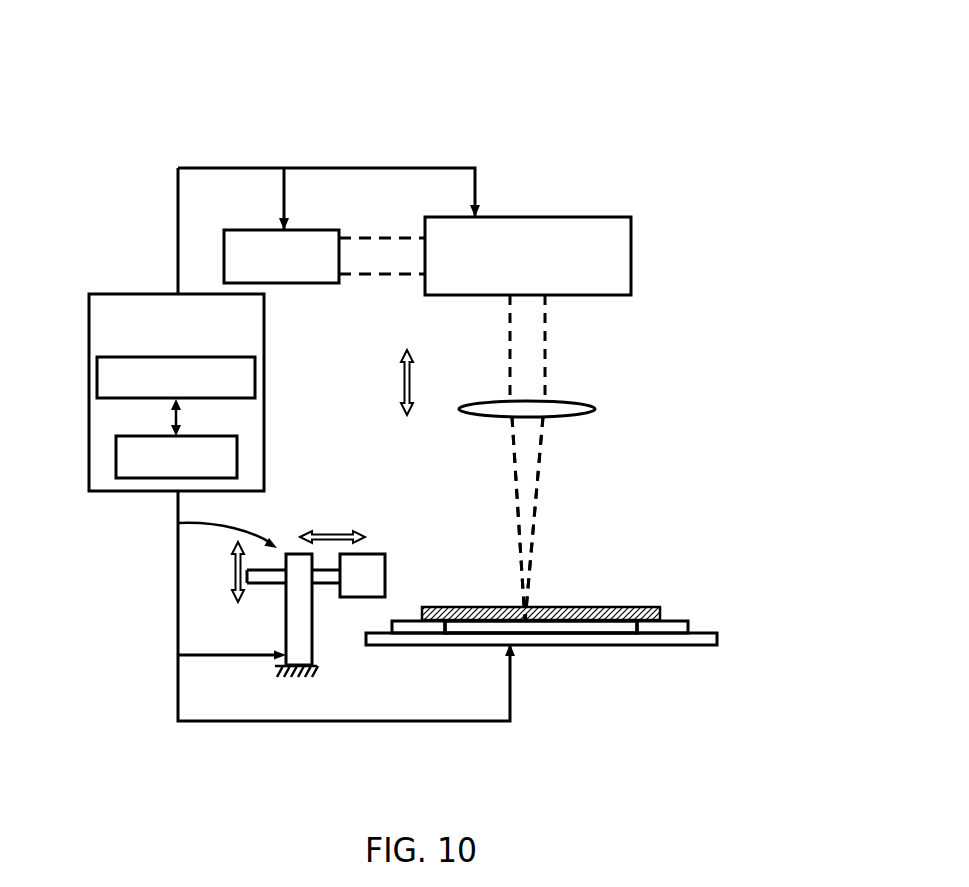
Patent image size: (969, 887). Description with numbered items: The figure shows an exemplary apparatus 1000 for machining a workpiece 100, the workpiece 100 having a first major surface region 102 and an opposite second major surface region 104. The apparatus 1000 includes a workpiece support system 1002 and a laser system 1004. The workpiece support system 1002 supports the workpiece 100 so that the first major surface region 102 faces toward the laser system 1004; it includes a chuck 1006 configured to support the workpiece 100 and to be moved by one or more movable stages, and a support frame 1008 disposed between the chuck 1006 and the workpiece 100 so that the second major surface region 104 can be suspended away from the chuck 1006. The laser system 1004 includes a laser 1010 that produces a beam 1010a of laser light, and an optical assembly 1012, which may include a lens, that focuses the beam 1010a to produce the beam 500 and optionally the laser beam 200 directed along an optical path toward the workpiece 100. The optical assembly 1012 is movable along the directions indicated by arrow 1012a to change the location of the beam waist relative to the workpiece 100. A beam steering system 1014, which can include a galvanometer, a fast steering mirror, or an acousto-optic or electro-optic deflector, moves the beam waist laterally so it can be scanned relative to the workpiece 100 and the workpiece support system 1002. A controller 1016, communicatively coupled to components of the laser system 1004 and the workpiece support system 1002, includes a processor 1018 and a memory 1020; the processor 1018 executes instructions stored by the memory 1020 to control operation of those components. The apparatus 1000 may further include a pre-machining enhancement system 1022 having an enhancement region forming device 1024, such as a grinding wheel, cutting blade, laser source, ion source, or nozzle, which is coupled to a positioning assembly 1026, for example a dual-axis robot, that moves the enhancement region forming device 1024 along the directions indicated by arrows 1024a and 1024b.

The apparatus 1000 is at (162, 31).
The workpiece support system 1002 is at (566, 684).
The laser system 1004 is at (565, 155).
The chuck 1006 is at (716, 634).
The support frame 1008 is at (682, 620).
The laser 1010 is at (311, 230).
The beam of laser light 1010a is at (357, 238).
The optical assembly 1012 is at (490, 401).
The arrow 1012a is at (575, 338).
The beam steering system 1014 is at (460, 217).
The controller 1016 is at (103, 294).
The processor 1018 is at (97, 357).
The memory 1020 is at (116, 438).
The pre-machining enhancement system 1022 is at (196, 531).
The enhancement region forming device 1024 is at (378, 554).
The arrow 1024a is at (335, 524).
The arrow 1024b is at (212, 579).
The positioning assembly 1026 is at (285, 648).
The workpiece 100 is at (641, 618).
The first major surface region 102 is at (632, 596).
The second major surface region 104 is at (603, 629).
The laser beam 200 is at (511, 457).
The beam 500 is at (468, 519).